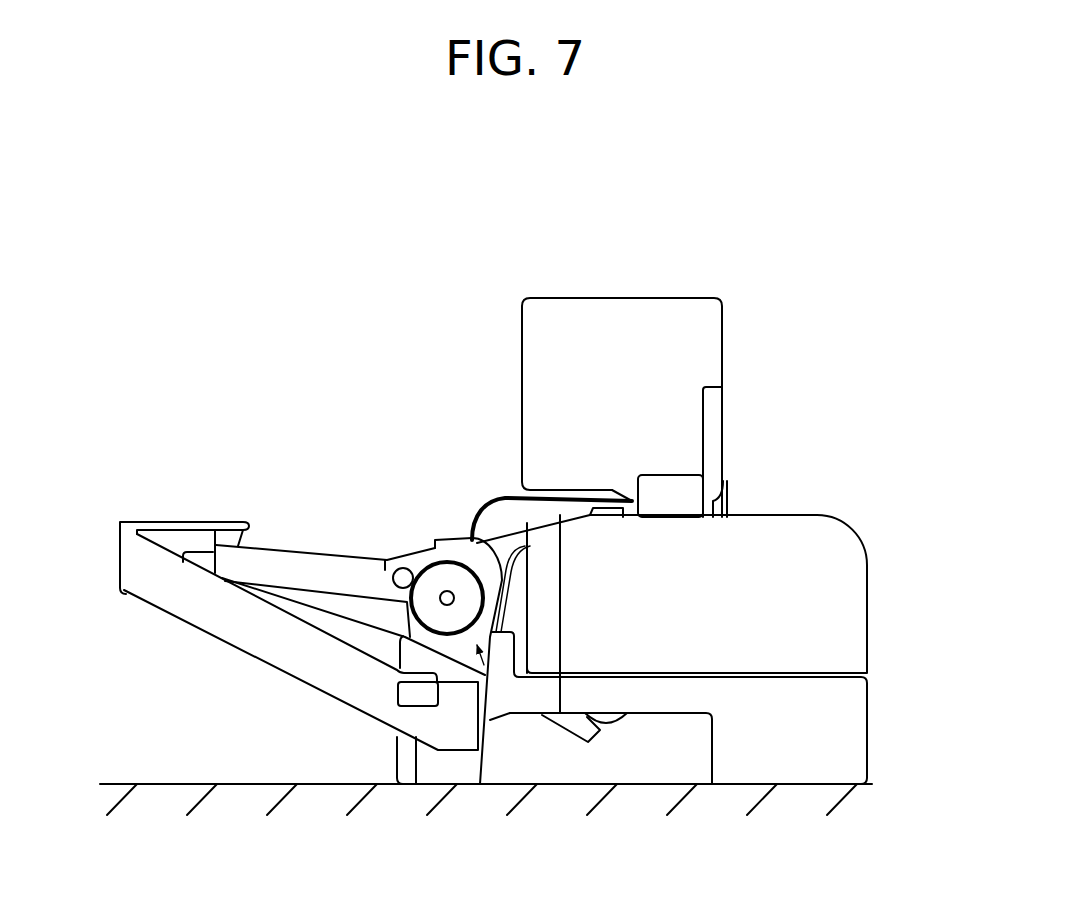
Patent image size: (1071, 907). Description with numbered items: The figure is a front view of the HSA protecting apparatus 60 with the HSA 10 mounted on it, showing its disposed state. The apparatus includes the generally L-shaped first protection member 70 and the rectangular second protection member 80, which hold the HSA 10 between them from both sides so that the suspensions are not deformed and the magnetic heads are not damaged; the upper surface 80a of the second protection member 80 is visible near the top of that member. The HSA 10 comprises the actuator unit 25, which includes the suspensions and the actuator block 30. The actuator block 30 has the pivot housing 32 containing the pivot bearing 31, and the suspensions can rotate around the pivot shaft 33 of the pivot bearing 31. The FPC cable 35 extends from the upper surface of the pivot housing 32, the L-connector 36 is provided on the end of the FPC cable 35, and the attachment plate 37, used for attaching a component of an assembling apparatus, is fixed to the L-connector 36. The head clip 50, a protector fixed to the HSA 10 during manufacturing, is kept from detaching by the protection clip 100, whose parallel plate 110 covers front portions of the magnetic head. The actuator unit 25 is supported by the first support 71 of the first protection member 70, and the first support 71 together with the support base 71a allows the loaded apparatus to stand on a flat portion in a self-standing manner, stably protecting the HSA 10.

The HSA 10 is at (114, 454).
The actuator unit 25 is at (323, 600).
The actuator block 30 is at (480, 786).
The pivot bearing 31 is at (465, 584).
The pivot housing 32 is at (445, 540).
The pivot shaft 33 is at (452, 598).
The FPC cable 35 is at (486, 510).
The L-connector 36 is at (712, 418).
The attachment plate 37 is at (706, 340).
The head clip 50 is at (333, 576).
The HSA protecting apparatus 60 is at (609, 294).
The first protection member 70 is at (201, 560).
The first support 71 is at (408, 788).
The support base 71a is at (855, 721).
The second protection member 80 is at (842, 559).
The housing top surface 80a is at (779, 528).
The protection clip 100 is at (199, 603).
The parallel plate 110 is at (139, 586).